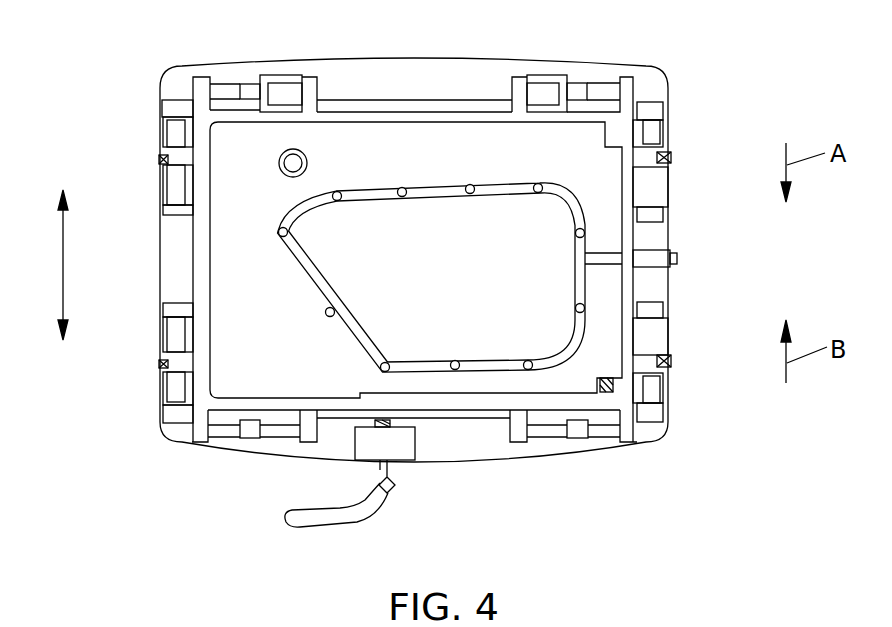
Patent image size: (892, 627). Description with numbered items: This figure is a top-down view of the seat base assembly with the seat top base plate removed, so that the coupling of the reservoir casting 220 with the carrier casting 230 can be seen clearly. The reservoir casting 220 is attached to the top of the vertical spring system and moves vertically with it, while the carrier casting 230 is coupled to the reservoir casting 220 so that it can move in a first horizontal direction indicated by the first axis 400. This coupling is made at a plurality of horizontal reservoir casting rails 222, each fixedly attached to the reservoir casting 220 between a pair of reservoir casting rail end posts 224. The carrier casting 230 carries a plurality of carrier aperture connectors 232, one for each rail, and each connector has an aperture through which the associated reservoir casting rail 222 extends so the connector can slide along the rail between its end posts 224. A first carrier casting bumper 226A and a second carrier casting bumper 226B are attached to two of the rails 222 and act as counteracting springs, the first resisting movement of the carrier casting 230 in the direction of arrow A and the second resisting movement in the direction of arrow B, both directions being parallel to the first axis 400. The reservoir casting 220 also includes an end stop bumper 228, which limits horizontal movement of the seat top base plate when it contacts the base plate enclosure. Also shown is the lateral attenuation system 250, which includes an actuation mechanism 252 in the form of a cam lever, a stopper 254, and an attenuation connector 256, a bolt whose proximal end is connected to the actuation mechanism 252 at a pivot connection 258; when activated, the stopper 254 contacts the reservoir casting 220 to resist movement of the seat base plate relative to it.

The reservoir casting 220 is at (165, 242).
The reservoir casting rail 222 is at (165, 135).
The reservoir casting rail end post 224 is at (162, 108).
The first carrier casting bumper 226A is at (653, 188).
The second carrier casting bumper 226B is at (653, 340).
The end stop bumper 228 is at (291, 152).
The carrier casting 230 is at (208, 272).
The carrier aperture connector 232 is at (160, 160).
The lateral attenuation system 250 is at (497, 483).
The actuation mechanism 252 is at (277, 510).
The stopper 254 is at (408, 450).
The attenuation connector 256 is at (373, 470).
The pivot connection 258 is at (393, 497).
The first axis 400 is at (63, 278).